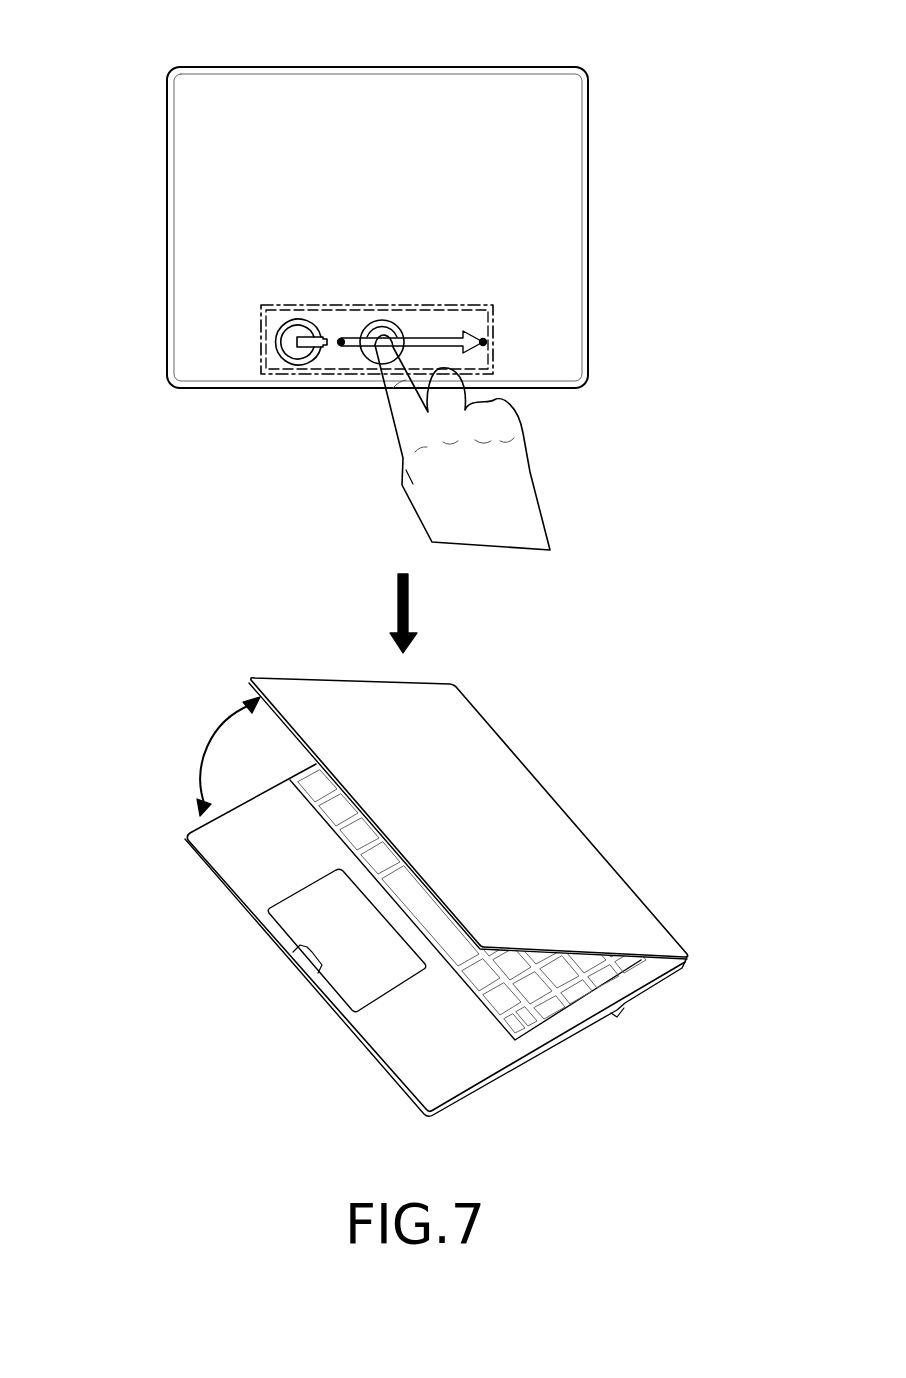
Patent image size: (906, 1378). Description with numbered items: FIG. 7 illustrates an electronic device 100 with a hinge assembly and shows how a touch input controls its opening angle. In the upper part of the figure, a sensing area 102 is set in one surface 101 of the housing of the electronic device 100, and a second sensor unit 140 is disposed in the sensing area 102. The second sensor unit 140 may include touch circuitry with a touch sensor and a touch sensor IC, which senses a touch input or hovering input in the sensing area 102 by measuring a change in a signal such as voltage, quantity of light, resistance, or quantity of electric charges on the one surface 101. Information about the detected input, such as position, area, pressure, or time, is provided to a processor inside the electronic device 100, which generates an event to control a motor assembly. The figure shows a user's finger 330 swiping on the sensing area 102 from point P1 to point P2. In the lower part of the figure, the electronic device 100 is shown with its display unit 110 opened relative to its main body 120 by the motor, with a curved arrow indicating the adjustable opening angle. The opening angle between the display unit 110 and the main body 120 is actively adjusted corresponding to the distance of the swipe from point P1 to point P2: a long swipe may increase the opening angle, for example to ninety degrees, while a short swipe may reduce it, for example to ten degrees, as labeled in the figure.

The electronic device 100 is at (410, 578).
The one surface 101 is at (193, 231).
The sensing area 102 is at (262, 338).
The second sensor unit 140 is at (283, 368).
The finger 330 is at (530, 472).
The display unit 110 is at (578, 868).
The main body 120 is at (455, 1062).
The point P1 is at (341, 340).
The point P2 is at (483, 340).